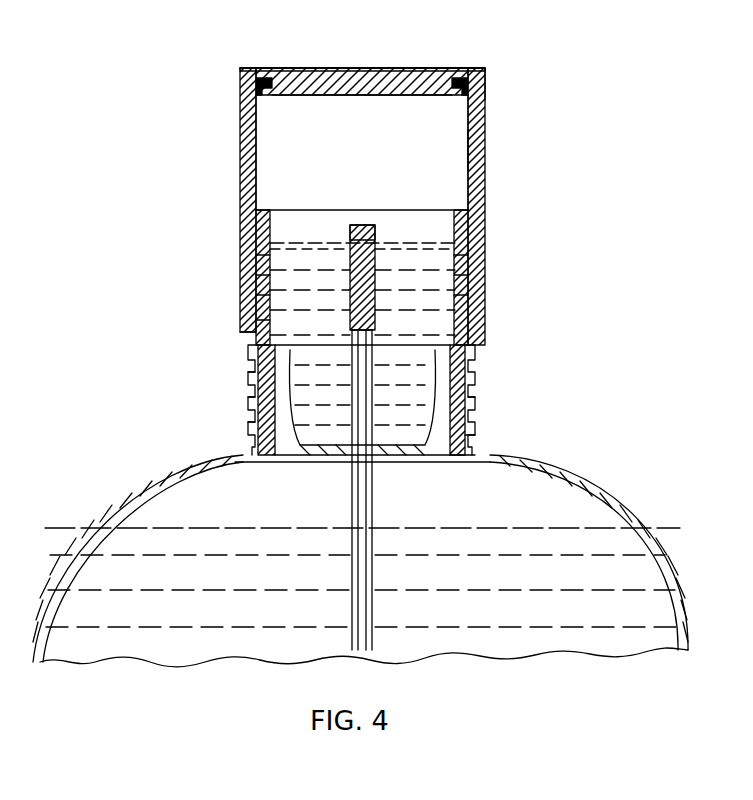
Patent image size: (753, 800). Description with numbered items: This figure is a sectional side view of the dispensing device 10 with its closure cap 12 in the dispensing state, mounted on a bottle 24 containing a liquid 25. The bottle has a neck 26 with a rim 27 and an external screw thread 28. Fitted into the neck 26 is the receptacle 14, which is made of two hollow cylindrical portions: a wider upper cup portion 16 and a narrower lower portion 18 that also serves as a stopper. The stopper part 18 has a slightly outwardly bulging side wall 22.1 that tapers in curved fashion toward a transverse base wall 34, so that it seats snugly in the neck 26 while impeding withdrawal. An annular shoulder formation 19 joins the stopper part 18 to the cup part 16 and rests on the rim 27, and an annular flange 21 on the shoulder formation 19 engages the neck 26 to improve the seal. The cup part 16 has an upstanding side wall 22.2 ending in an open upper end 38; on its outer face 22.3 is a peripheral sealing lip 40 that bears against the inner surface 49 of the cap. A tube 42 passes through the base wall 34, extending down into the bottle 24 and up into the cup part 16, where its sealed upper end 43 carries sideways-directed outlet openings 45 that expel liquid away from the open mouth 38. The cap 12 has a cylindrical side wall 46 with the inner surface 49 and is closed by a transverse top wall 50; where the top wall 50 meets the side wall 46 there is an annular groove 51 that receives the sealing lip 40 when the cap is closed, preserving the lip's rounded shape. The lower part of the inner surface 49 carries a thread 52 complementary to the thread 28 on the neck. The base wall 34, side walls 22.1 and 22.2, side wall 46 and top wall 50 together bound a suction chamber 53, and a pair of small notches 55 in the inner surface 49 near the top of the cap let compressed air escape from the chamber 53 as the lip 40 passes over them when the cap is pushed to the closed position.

The dispensing device 10 is at (594, 86).
The closure cap 12 is at (374, 182).
The receptacle 14 is at (484, 345).
The upper hollow cylindrical portion 16 is at (470, 222).
The lower hollow cylindrical portion 18 is at (470, 442).
The annular shoulder formation 19 is at (275, 352).
The annular flange 21 is at (478, 365).
The side wall of stopper part 22.1 is at (472, 408).
The side wall of cup part 22.2 is at (258, 262).
The outer face of side wall 22.3 is at (252, 240).
The bottle 24 is at (632, 497).
The liquid 25 is at (595, 610).
The neck 26 is at (250, 424).
The rim 27 is at (252, 305).
The external screw thread 28 is at (250, 400).
The base wall 34 is at (410, 462).
The open upper end 38 is at (420, 224).
The sealing lip 40 is at (268, 210).
The tube 42 is at (365, 612).
The upper end of tube 43 is at (363, 235).
The outlet openings 45 is at (352, 235).
The cylindrical side wall 46 is at (478, 182).
The inner surface 49 is at (468, 148).
The top wall 50 is at (432, 68).
The annular groove 51 is at (262, 94).
The thread 52 is at (470, 292).
The suction chamber 53 is at (372, 110).
The notches 55 is at (240, 115).